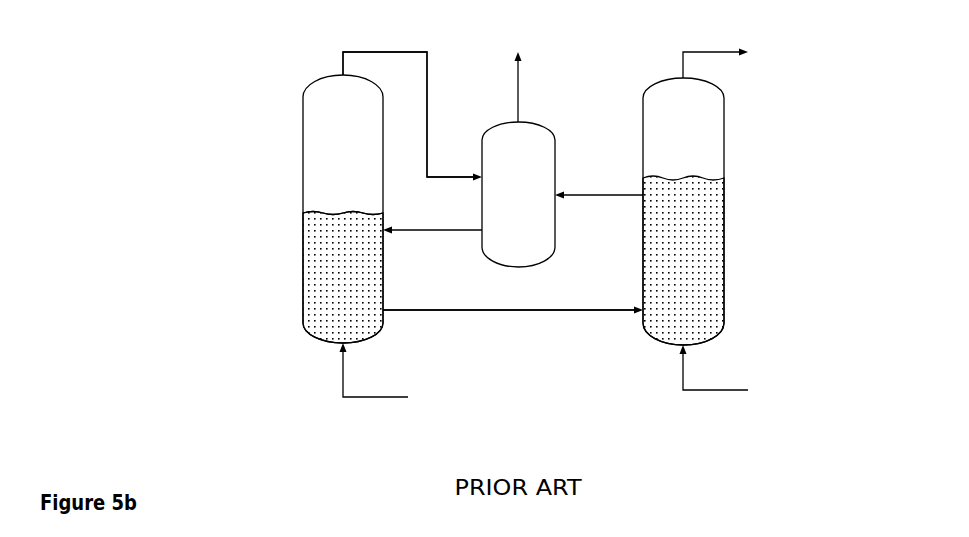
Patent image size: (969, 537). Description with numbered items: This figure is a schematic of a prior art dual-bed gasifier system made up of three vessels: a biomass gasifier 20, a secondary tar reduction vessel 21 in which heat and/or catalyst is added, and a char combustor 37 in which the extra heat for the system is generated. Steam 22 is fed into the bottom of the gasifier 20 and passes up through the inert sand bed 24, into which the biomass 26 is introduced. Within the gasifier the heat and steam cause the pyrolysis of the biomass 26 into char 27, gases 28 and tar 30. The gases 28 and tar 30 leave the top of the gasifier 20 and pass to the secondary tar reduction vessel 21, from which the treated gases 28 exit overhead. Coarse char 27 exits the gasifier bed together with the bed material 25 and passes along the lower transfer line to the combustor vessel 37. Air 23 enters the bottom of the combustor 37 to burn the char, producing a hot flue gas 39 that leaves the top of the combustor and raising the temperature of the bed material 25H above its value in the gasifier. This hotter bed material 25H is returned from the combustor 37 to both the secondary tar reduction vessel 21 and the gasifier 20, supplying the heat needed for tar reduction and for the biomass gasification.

The biomass gasifier 20 is at (287, 123).
The secondary tar reduction vessel 21 is at (537, 223).
The steam 22 is at (391, 374).
The air 23 is at (732, 373).
The inert sand bed 24 is at (327, 320).
The bed material 25 is at (513, 298).
The hot bed material 25H is at (513, 198).
The biomass 26 is at (295, 225).
The char 27 is at (509, 322).
The gases 28 is at (437, 101).
The tar 30 is at (412, 116).
The char combustor 37 is at (732, 105).
The hot flue gas 39 is at (733, 59).